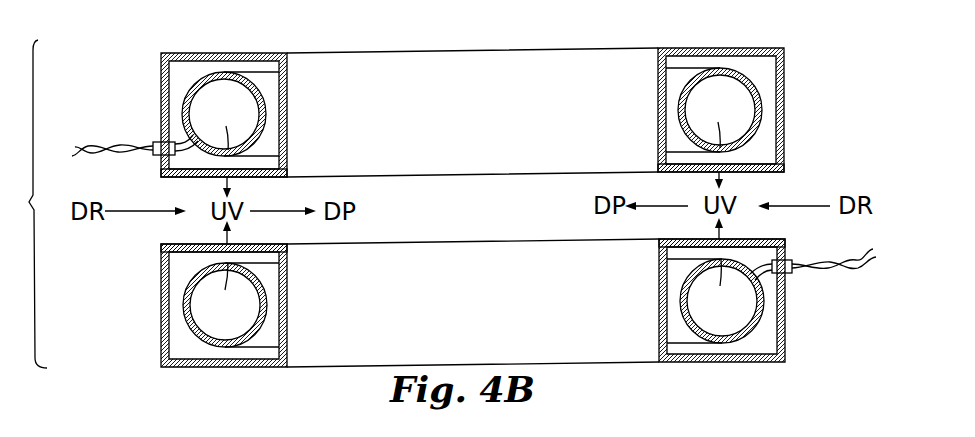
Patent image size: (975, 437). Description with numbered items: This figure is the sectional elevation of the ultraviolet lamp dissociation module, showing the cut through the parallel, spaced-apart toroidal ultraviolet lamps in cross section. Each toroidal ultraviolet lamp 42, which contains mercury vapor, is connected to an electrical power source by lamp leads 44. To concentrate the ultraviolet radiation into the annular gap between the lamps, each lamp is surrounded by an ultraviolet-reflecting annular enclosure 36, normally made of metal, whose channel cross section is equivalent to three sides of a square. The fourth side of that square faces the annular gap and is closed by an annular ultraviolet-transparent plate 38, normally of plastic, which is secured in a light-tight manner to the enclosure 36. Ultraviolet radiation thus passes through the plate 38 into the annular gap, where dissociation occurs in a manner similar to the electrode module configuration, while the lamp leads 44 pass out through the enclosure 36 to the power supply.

The ultraviolet-reflecting annular enclosure 36 is at (203, 53).
The annular ultraviolet-transparent plate 38 is at (203, 177).
The toroidal ultraviolet lamp 42 is at (188, 97).
The lamp leads 44 is at (113, 143).